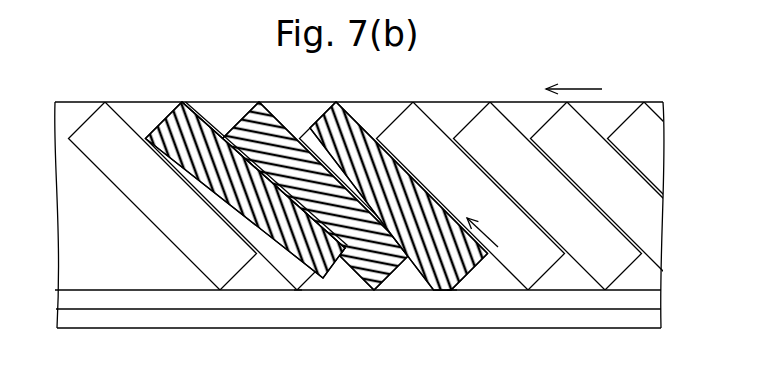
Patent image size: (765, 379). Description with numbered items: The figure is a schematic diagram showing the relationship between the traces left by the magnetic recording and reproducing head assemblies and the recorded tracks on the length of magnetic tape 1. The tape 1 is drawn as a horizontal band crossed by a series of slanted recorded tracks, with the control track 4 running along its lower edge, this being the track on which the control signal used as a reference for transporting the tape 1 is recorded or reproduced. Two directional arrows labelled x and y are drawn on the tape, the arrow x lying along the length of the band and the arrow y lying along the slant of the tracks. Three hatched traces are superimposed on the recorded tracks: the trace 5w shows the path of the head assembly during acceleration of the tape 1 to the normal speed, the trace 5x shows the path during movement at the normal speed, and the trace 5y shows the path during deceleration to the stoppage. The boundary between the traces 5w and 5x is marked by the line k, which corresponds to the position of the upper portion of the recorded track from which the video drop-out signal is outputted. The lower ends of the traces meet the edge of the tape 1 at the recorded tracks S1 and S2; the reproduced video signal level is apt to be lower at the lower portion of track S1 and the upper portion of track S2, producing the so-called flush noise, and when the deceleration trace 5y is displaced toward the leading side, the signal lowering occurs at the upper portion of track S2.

The magnetic tape 1 is at (614, 118).
The control track 4 is at (650, 302).
The trace during acceleration 5w is at (205, 124).
The trace during normal-speed movement 5x is at (304, 132).
The trace during deceleration 5y is at (354, 138).
The upper portion of the recorded track k is at (242, 150).
The recorded track S1 is at (298, 291).
The recorded track S2 is at (457, 291).
The tape running direction x is at (562, 87).
The head scanning direction y is at (471, 221).